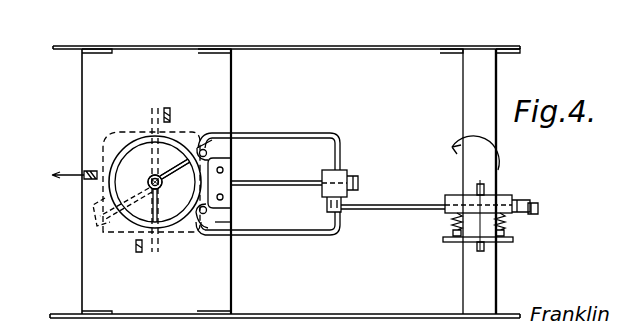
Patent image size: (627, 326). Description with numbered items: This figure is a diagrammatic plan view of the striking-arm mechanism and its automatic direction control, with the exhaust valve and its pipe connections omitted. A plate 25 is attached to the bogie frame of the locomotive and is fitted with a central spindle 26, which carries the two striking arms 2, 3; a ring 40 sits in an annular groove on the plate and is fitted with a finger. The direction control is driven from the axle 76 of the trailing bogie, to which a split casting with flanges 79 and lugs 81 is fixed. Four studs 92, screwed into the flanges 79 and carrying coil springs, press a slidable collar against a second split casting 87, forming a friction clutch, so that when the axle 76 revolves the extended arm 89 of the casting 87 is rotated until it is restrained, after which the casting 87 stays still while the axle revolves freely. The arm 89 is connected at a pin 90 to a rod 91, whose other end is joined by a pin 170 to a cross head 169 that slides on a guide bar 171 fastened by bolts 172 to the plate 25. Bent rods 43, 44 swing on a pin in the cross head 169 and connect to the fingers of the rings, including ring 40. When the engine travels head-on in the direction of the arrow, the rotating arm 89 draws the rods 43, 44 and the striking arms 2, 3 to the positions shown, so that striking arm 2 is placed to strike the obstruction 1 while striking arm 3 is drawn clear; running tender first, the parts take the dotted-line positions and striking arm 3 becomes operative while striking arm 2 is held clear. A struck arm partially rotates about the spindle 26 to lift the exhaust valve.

The obstruction 1 is at (167, 107).
The striking arm 2 is at (157, 252).
The striking arm 3 is at (176, 165).
The plate 25 is at (105, 67).
The central spindle 26 is at (150, 179).
The ring 40 is at (112, 188).
The bent rod 43 is at (276, 236).
The bent rod 44 is at (256, 133).
The axle 76 is at (483, 291).
The flange 79 is at (491, 203).
The lug 81 is at (479, 248).
The split casting 87 is at (452, 203).
The extended arm 89 is at (530, 205).
The pin 90 is at (484, 192).
The rod 91 is at (388, 211).
The stud 92 is at (506, 228).
The cross head 169 is at (344, 172).
The pin 170 is at (341, 214).
The guide bar 171 is at (278, 181).
The bolt 172 is at (220, 200).